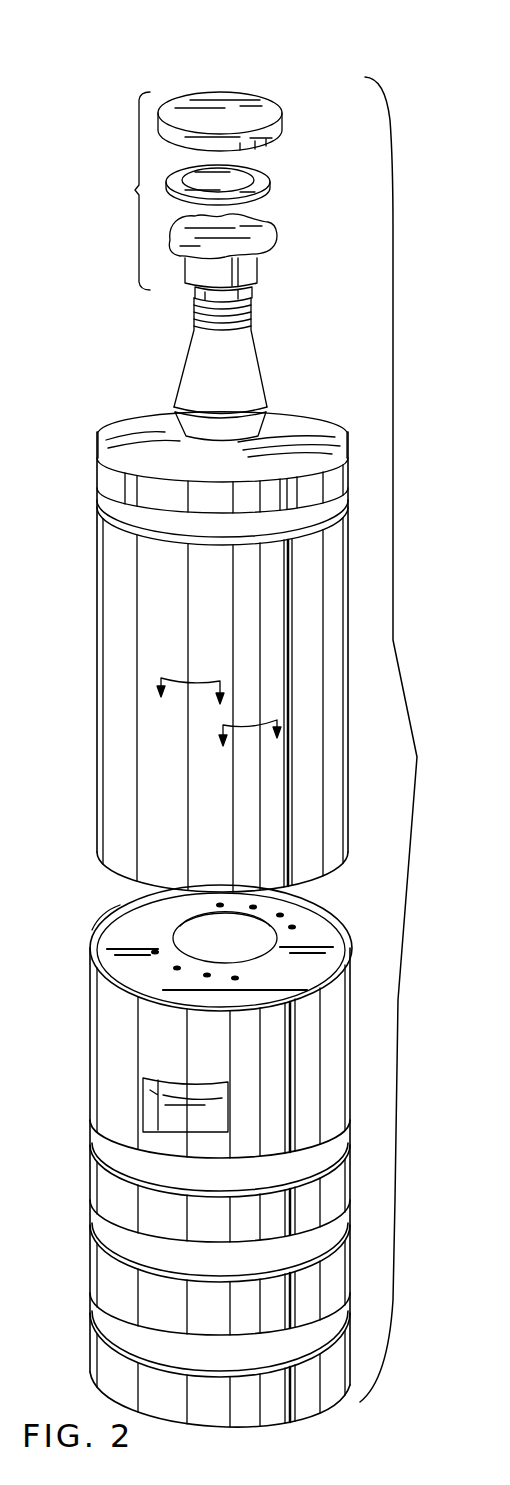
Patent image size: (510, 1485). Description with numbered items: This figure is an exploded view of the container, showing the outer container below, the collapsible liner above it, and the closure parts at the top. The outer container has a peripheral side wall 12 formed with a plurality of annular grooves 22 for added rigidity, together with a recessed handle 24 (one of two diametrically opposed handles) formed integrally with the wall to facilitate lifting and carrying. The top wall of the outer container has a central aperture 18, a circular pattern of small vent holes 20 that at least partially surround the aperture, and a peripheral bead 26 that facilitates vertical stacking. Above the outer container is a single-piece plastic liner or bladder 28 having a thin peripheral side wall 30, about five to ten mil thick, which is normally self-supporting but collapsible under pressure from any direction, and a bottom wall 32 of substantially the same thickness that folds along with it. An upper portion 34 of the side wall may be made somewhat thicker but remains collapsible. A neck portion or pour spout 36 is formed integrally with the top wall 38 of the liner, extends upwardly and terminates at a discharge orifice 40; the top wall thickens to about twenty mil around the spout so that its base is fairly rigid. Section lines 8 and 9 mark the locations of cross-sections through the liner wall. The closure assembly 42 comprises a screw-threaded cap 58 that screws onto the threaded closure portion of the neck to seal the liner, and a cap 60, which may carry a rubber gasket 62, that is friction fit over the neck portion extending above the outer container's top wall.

The peripheral side wall 12 is at (90, 1023).
The central aperture 18 is at (186, 940).
The vent holes 20 is at (155, 952).
The annular grooves 22 is at (97, 1137).
The recessed handle 24 is at (146, 1118).
The peripheral bead 26 is at (95, 920).
The container liner 28 is at (183, 636).
The peripheral side wall 30 is at (97, 612).
The bottom wall 32 is at (138, 878).
The upper portion of the sidewall 34 is at (100, 478).
The pour spout 36 is at (265, 349).
The top wall 38 is at (286, 425).
The discharge orifice 40 is at (236, 292).
The closure assembly 42 is at (206, 176).
The screw-threaded cap 58 is at (247, 236).
The cap 60 is at (225, 115).
The gasket 62 is at (256, 178).
The section line 8- 8 is at (190, 703).
The section line 9- 9 is at (250, 747).